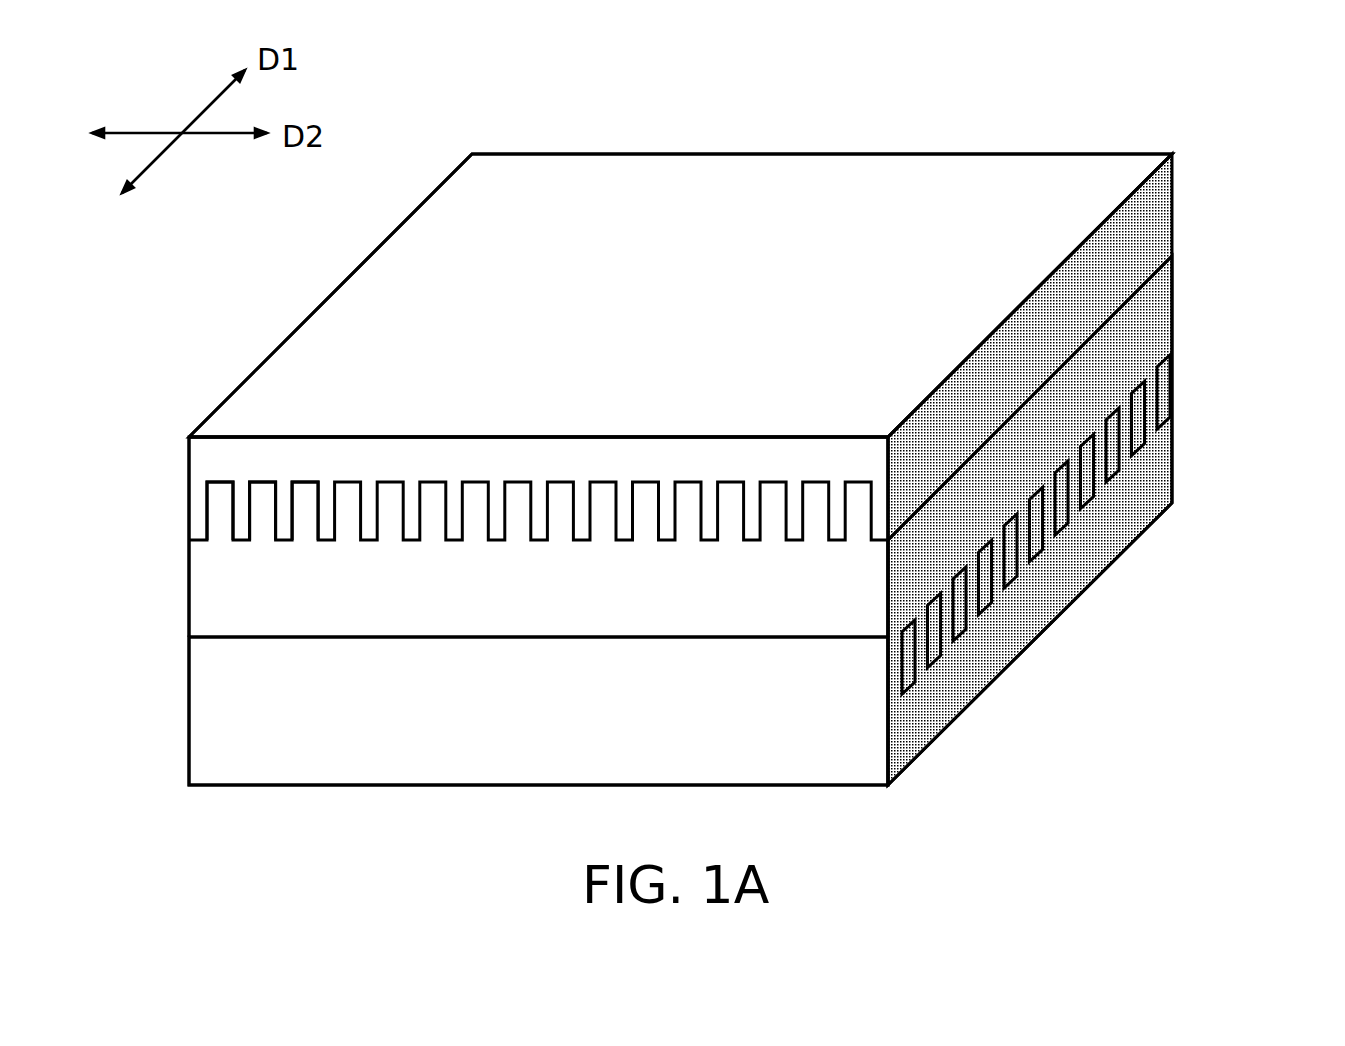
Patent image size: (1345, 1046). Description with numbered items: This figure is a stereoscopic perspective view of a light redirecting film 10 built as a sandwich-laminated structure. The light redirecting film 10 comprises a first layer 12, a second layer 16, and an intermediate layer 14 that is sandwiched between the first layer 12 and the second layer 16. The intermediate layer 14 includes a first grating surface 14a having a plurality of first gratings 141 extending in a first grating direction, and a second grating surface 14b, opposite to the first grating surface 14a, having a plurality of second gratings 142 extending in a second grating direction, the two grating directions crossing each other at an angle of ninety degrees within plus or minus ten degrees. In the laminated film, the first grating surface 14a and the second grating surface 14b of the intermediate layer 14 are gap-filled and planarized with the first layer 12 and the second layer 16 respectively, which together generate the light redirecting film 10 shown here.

The light redirecting film 10 is at (1238, 48).
The first layer 12 is at (1025, 375).
The intermediate layer 14 is at (215, 617).
The first grating surface 14a is at (199, 486).
The second grating surface 14b is at (1078, 540).
The first gratings 141 is at (222, 535).
The second gratings 142 is at (1140, 419).
The second layer 16 is at (552, 735).